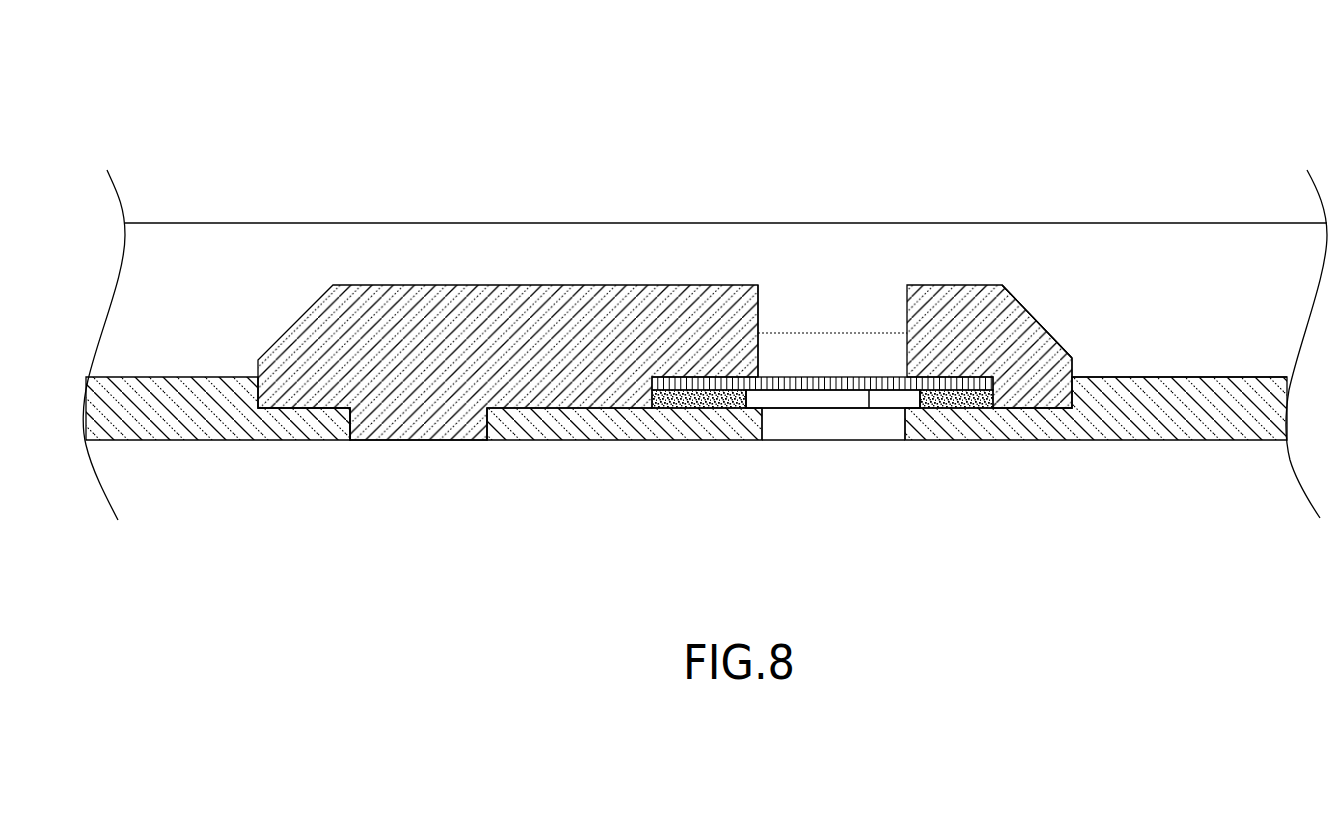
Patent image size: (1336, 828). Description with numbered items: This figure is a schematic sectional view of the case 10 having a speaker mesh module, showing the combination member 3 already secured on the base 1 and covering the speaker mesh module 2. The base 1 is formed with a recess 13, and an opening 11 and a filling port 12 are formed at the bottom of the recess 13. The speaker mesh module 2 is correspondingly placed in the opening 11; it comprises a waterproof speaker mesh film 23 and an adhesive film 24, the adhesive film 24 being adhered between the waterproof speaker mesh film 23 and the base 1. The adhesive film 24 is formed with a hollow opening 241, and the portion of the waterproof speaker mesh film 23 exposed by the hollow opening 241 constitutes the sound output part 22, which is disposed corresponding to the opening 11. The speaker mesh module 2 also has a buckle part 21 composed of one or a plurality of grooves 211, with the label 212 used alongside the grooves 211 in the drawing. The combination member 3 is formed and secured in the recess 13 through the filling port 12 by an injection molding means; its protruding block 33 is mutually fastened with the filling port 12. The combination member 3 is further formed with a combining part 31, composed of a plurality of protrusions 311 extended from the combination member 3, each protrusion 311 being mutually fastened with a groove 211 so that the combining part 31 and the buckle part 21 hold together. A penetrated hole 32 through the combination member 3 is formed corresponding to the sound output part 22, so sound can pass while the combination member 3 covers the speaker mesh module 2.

The case 10 is at (1010, 90).
The base 1 is at (1180, 417).
The opening 11 is at (762, 413).
The filling port 12 is at (330, 438).
The recess 13 is at (1097, 393).
The speaker mesh module 2 is at (990, 519).
The buckle part 21 is at (1000, 412).
The groove 211 is at (1027, 357).
The side surface of electrode 212 is at (1037, 321).
The sound output part 22 is at (842, 393).
The waterproof speaker mesh film 23 is at (870, 398).
The adhesive film 24 is at (933, 413).
The hollow opening 241 is at (787, 402).
The combination member 3 is at (482, 307).
The combining part 31 is at (1042, 412).
The protrusion 311 is at (1067, 407).
The penetrated hole 32 is at (758, 310).
The protruding block 33 is at (430, 427).